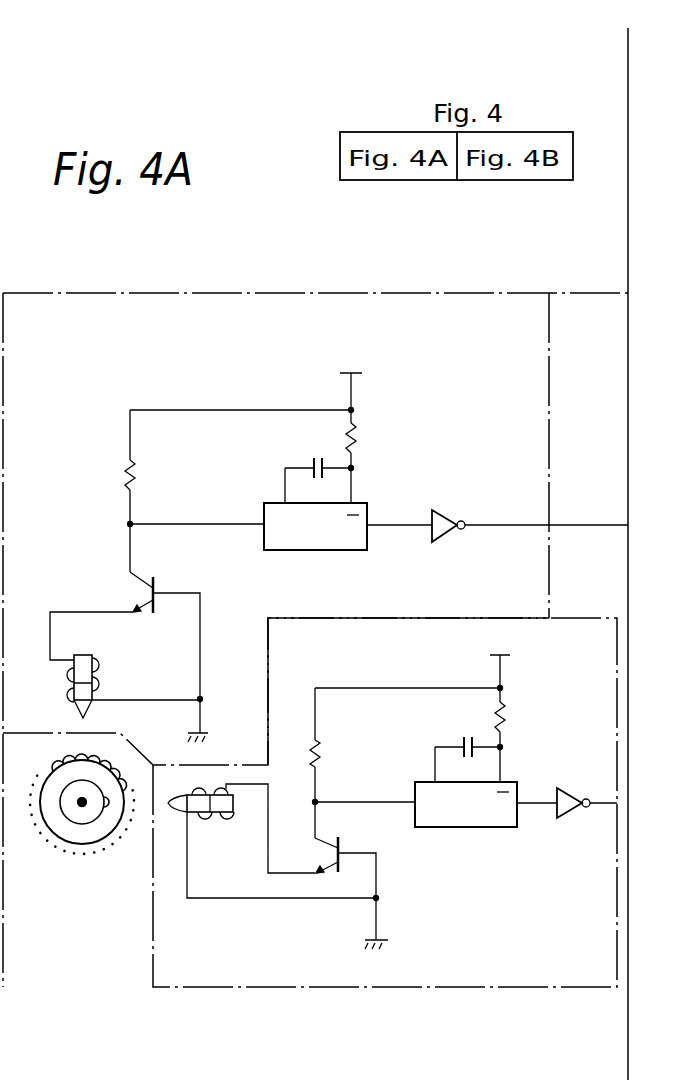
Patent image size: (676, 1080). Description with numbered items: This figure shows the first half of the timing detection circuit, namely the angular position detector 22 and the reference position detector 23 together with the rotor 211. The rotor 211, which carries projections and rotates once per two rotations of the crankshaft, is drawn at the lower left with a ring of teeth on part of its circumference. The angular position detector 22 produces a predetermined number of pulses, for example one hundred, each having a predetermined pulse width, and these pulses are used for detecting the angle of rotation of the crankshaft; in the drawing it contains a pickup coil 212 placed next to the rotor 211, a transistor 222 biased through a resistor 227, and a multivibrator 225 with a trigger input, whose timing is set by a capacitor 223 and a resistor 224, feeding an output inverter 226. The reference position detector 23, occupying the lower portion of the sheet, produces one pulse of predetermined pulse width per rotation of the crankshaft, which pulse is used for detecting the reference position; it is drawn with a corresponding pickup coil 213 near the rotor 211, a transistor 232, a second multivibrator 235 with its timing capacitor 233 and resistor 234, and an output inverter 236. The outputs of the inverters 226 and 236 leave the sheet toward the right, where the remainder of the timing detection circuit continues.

The angular position detector 22 is at (371, 293).
The reference position detector 23 is at (480, 990).
The rotor 211 is at (80, 838).
The pickup coil 212 is at (95, 661).
The pickup coil 213 is at (232, 813).
The transistor 222 is at (140, 598).
The capacitor 223 is at (318, 457).
The resistor 224 is at (357, 440).
The multivibrator 225 is at (335, 550).
The inverter 226 is at (447, 516).
The resistor 227 is at (136, 474).
The transistor 232 is at (334, 834).
The capacitor 233 is at (468, 736).
The resistor 234 is at (508, 712).
The multivibrator 235 is at (478, 828).
The inverter 236 is at (573, 789).